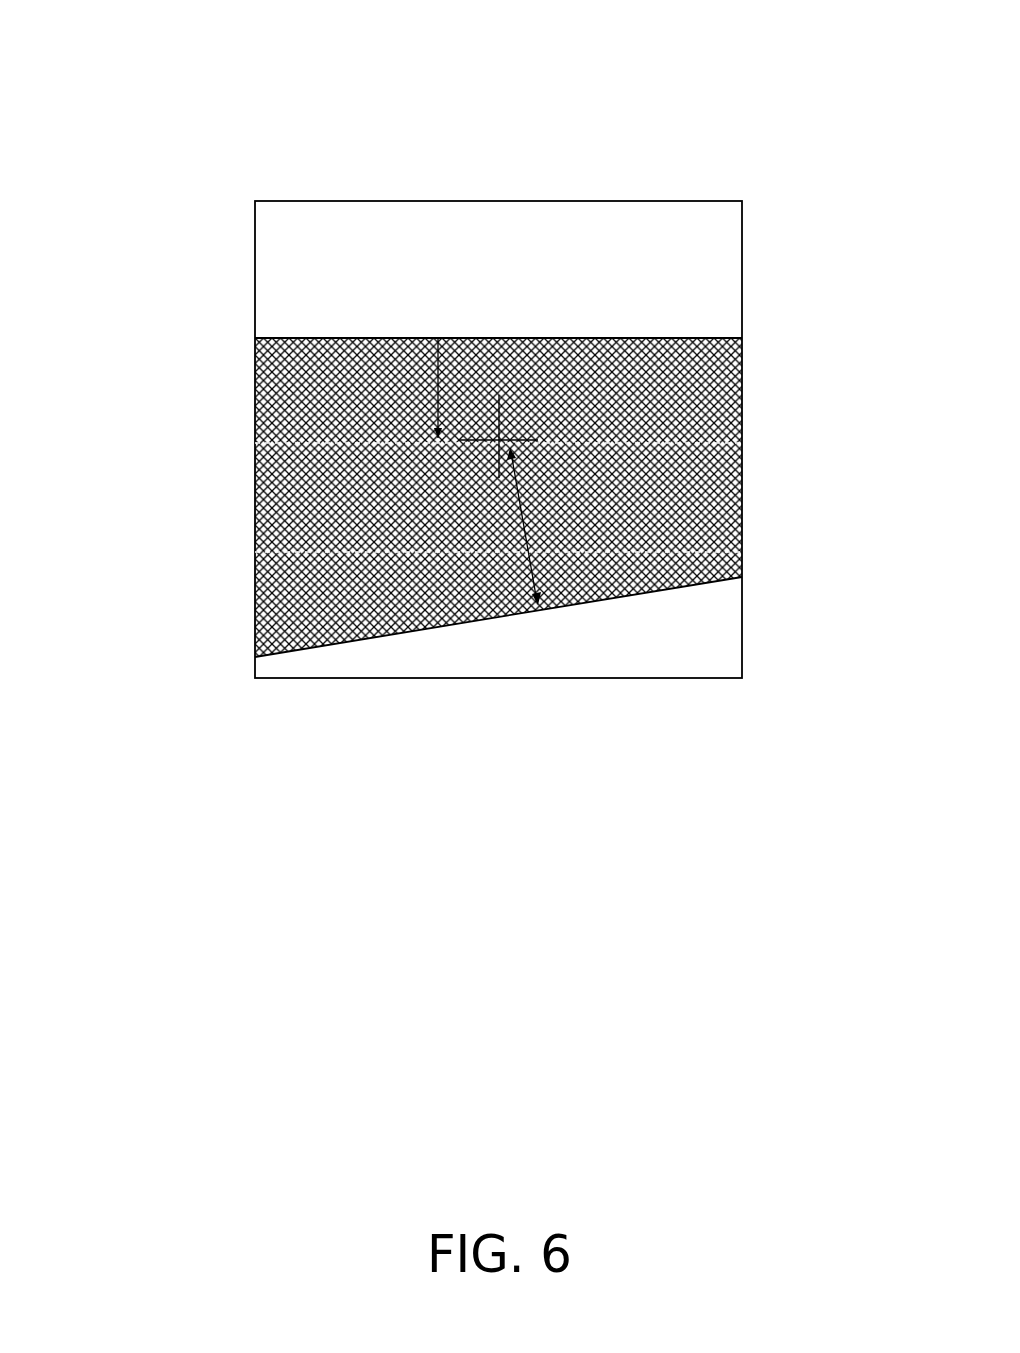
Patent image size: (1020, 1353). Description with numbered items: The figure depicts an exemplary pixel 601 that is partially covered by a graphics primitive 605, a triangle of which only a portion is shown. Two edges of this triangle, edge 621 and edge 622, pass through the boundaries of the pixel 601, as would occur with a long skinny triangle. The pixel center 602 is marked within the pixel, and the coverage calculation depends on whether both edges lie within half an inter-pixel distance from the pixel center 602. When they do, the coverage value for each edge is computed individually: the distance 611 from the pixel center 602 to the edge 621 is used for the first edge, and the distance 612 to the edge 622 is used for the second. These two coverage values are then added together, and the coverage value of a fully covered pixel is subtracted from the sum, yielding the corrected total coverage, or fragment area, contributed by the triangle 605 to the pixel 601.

The pixel 601 is at (561, 200).
The pixel center 602 is at (497, 362).
The graphics primitive 605 is at (658, 590).
The distance 611 is at (420, 397).
The distance 612 is at (550, 496).
The edge 621 is at (620, 338).
The edge 622 is at (438, 635).